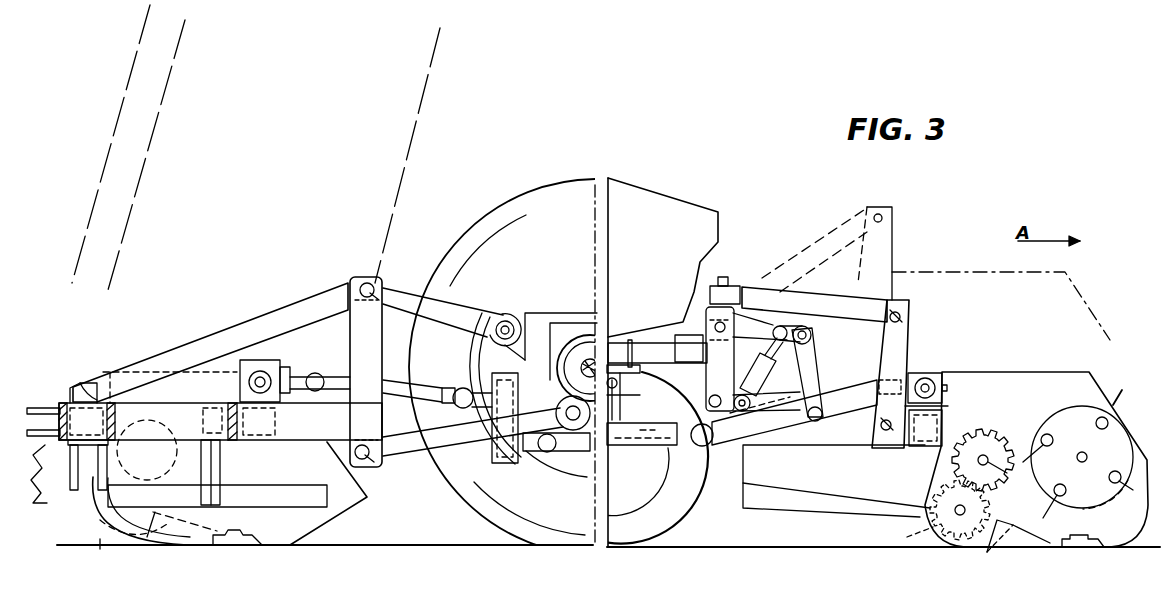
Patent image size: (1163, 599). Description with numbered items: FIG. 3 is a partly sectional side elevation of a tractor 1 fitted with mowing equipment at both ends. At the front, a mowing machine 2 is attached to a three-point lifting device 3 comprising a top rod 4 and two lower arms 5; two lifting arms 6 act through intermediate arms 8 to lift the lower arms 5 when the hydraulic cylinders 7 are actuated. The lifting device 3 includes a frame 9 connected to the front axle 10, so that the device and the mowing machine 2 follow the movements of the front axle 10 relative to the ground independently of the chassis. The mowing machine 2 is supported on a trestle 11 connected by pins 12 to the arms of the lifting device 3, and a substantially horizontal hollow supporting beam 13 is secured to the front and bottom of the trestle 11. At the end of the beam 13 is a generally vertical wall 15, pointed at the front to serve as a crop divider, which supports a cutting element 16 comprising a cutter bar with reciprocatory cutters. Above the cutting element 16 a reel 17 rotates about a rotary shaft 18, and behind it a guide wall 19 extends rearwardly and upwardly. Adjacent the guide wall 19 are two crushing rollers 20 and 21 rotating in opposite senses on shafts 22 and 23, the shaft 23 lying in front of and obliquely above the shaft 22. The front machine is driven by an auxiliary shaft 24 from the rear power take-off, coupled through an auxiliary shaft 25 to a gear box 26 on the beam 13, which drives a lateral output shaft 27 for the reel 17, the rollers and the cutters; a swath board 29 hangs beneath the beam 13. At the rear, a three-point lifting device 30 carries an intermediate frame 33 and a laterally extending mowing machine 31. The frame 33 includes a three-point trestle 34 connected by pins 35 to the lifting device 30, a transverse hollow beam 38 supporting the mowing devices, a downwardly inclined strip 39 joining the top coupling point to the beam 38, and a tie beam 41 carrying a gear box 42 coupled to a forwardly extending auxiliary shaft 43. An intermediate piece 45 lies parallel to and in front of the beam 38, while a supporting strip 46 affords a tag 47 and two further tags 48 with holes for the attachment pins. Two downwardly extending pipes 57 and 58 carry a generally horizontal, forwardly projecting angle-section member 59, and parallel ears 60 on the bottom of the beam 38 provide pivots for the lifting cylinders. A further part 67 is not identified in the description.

The tractor 1 is at (645, 181).
The mowing machine 2 is at (1012, 272).
The three-point lifting device 3 is at (811, 299).
The top rod 4 is at (812, 250).
The lower arms 5 is at (846, 430).
The lifting arms 6 is at (806, 329).
The hydraulic cylinders 7 is at (771, 382).
The intermediate arms 8 is at (820, 371).
The frame 9 is at (733, 367).
The front axle 10 is at (668, 387).
The trestle 11 is at (893, 243).
The pins 12 is at (908, 313).
The supporting beam 13 is at (943, 420).
The wall 15 is at (1048, 371).
The cutting element 16 is at (265, 548).
The reel 17 is at (292, 474).
The rotary shaft 18 is at (1088, 458).
The guide wall 19 is at (987, 553).
The crushing roller 20 is at (608, 545).
The crushing roller 21 is at (1010, 428).
The shaft 22 is at (965, 509).
The shaft 23 is at (1011, 480).
The auxiliary shaft 24 is at (577, 455).
The auxiliary shaft 25 is at (712, 447).
The gear box 26 is at (942, 368).
The output shaft 27 is at (935, 388).
The swath board 29 is at (770, 509).
The three-point lifting device 30 is at (472, 357).
The mowing machine 31 is at (407, 158).
The intermediate frame 33 is at (270, 304).
The three-point trestle 34 is at (352, 343).
The pins 35 is at (373, 285).
The hollow beam 38 is at (65, 405).
The strip 39 is at (184, 347).
The tie beam 41 is at (220, 408).
The gear box 42 is at (272, 366).
The auxiliary shaft 43 is at (428, 388).
The intermediate piece 45 is at (213, 406).
The supporting strip 46 is at (378, 424).
The tag 47 is at (268, 441).
The tags 48 is at (90, 383).
The pipe 57 is at (132, 466).
The pipe 58 is at (220, 466).
The angle-section member 59 is at (270, 508).
The ears 60 is at (90, 500).
The bracket 67 is at (51, 474).